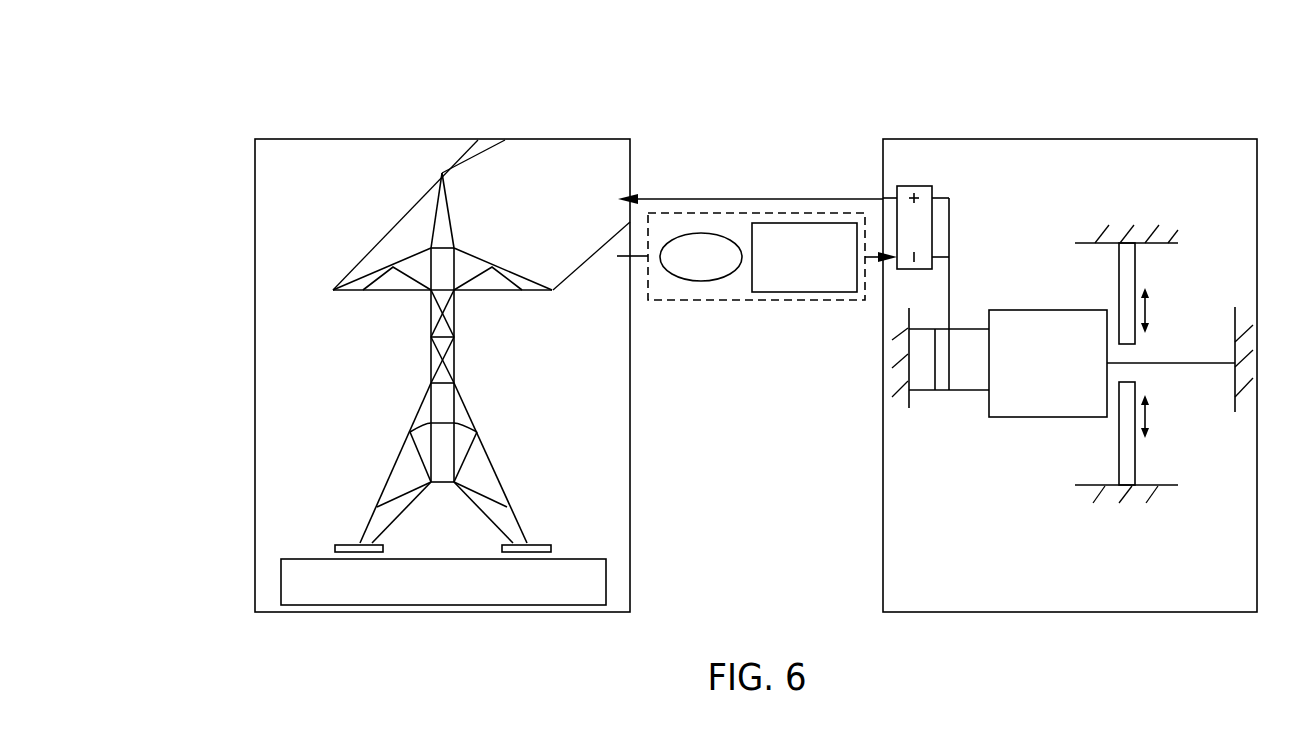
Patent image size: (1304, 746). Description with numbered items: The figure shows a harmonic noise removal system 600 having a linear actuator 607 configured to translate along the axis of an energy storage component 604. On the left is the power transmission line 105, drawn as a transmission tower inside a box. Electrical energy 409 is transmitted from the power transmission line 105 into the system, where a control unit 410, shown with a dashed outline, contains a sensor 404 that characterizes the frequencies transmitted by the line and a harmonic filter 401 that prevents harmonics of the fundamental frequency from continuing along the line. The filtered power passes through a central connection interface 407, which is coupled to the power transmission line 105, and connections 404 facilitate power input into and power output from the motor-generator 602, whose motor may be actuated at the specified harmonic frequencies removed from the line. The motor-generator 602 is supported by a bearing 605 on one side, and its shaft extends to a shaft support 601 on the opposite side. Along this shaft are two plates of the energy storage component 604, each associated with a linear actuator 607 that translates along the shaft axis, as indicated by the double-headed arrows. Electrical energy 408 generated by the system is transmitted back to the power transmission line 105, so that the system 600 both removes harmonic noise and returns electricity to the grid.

The power transmission line 105 is at (592, 138).
The harmonic filter 401 is at (823, 292).
The connections 404 is at (698, 282).
The central connection interface 407 is at (920, 185).
The electrical energy 408 is at (747, 198).
The electrical energy 409 is at (635, 258).
The control unit 410 is at (765, 300).
The harmonic noise removal system 600 is at (1188, 70).
The shaft support 601 is at (1222, 365).
The motor-generator 602 is at (1035, 418).
The energy storage component 604 is at (1135, 257).
The bearing 605 is at (933, 332).
The linear actuator 607 is at (1147, 313).